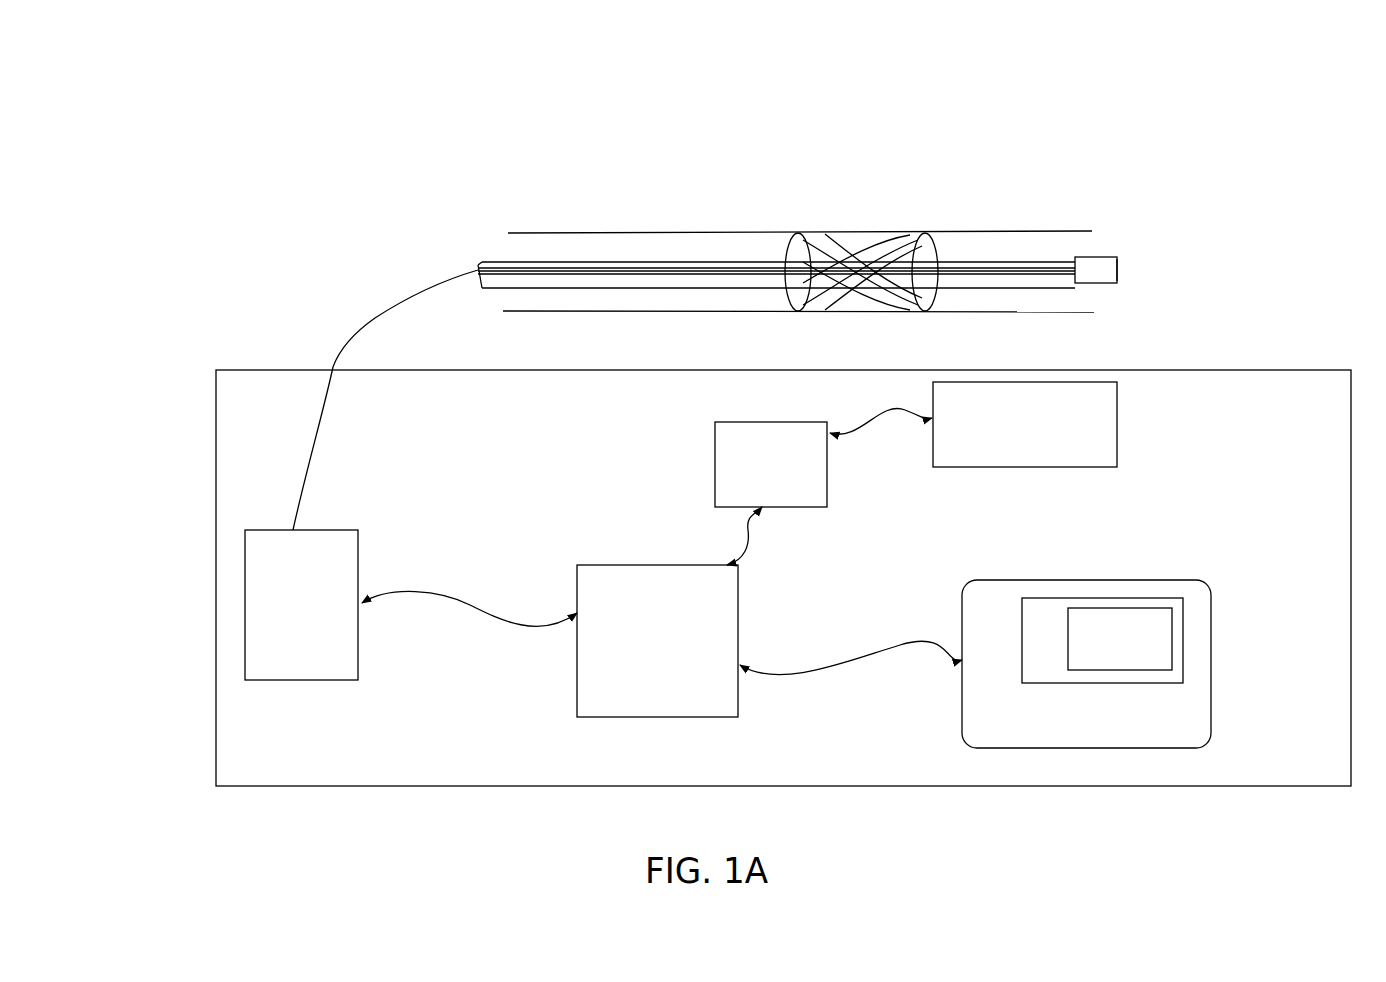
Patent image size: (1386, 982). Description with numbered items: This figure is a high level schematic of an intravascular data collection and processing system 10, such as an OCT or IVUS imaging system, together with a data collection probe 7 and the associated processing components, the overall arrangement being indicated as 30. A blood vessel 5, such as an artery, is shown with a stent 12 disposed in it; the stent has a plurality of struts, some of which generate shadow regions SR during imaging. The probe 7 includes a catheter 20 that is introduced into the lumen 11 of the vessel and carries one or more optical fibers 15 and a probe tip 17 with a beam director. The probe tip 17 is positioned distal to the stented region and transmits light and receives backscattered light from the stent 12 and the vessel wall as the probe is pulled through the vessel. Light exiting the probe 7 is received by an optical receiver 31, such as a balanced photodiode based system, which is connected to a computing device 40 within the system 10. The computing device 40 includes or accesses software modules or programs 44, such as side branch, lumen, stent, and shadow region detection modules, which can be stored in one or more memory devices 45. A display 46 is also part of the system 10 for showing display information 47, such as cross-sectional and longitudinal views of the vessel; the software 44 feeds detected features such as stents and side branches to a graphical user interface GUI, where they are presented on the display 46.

The intravascular data collection and processing system 10 is at (1250, 366).
The catheter system 30 is at (445, 137).
The blood vessel 5 is at (680, 233).
The lumen 11 is at (601, 243).
The data collection probe 7 is at (1025, 272).
The stent 12 is at (916, 240).
The shadow regions SR is at (846, 245).
The optical fiber 15 is at (375, 318).
The probe tip 17 is at (1076, 258).
The catheter 20 is at (1118, 270).
The optical receiver 31 is at (301, 605).
The computing device 40 is at (630, 564).
The memory devices 45 is at (713, 434).
The software modules or programs 44 is at (1025, 424).
The display 46 is at (1008, 580).
The display information 47 is at (1120, 639).
The graphical user interface GUI is at (1183, 676).